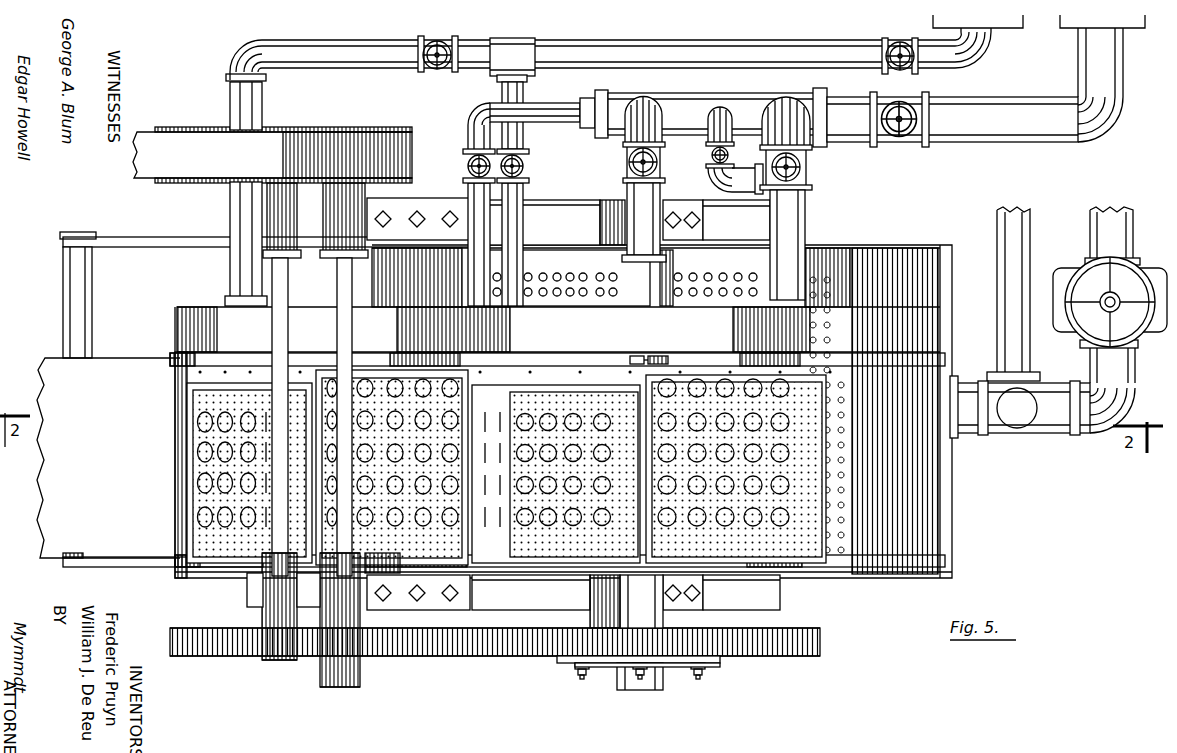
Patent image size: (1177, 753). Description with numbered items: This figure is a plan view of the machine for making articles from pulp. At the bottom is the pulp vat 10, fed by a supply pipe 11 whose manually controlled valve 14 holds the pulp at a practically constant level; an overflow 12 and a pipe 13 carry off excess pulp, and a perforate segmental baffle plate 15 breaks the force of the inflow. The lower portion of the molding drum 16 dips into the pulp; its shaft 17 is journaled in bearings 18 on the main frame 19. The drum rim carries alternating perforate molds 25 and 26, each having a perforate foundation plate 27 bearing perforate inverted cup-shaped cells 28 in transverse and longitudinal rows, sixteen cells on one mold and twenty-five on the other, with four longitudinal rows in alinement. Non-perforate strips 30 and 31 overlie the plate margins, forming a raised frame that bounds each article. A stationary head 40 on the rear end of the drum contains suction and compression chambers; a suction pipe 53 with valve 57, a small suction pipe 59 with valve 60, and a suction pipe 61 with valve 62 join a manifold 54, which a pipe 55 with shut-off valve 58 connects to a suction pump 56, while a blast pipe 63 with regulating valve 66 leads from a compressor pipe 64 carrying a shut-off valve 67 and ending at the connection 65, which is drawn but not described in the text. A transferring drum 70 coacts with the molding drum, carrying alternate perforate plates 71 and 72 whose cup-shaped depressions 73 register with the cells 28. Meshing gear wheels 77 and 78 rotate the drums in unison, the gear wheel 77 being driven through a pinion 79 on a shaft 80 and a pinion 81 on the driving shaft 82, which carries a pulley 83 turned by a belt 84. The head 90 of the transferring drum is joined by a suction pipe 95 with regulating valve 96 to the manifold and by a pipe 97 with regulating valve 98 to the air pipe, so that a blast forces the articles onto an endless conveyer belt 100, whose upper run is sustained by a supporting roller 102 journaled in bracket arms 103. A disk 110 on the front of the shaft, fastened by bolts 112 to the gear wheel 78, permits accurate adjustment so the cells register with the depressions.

The pulp vat 10 is at (398, 252).
The supply pipe 11 is at (1118, 230).
The overflow 12 is at (935, 548).
The pipe 13 is at (1003, 315).
The manually controlled valve 14 is at (1138, 272).
The perforate segmental baffle plate 15 is at (565, 250).
The molding drum 16 is at (758, 566).
The shaft 17 is at (663, 282).
The bearings 18 is at (690, 212).
The main frame 19 is at (450, 210).
The perforate mold 25 is at (575, 395).
The perforate mold 26 is at (705, 375).
The perforate foundation plate 27 is at (655, 505).
The perforate inverted cup-shaped cells 28 is at (818, 455).
The transverse strips 30 is at (645, 372).
The longitudinal strips 31 is at (547, 380).
The stationary head 40 is at (558, 329).
The suction pipe 53 is at (628, 182).
The manifold 54 is at (683, 103).
The pipe 55 is at (948, 128).
The suction pump 56 is at (1076, 33).
The valve 57 is at (630, 158).
The shut-off valve 58 is at (897, 138).
The small suction pipe 59 is at (742, 183).
The valve 60 is at (711, 155).
The suction pipe 61 is at (800, 232).
The valve 62 is at (806, 172).
The blast pipe 63 is at (521, 137).
The pipe 64 is at (763, 56).
The pipe connection 65 is at (998, 28).
The regulating valve 66 is at (524, 167).
The shut-off valve 67 is at (900, 42).
The transferring drum 70 is at (370, 572).
The perforate plate 71 is at (245, 392).
The perforate plate 72 is at (385, 385).
The perforate cup-shaped depressions 73 is at (200, 452).
The gear wheel 77 is at (175, 656).
The gear wheel 78 is at (560, 660).
The pinion 79 is at (322, 650).
The shaft 80 is at (336, 330).
The pinion 81 is at (262, 650).
The driving shaft 82 is at (283, 296).
The pulley 83 is at (325, 140).
The belt 84 is at (200, 147).
The head 90 is at (212, 318).
The suction pipe 95 is at (469, 140).
The regulating valve 96 is at (467, 168).
The pipe 97 is at (258, 112).
The regulating valve 98 is at (437, 41).
The endless conveyer belt 100 is at (40, 510).
The supporting roller 102 is at (90, 333).
The bracket arms 103 is at (157, 247).
The disk 110 is at (718, 660).
The bolts 112 is at (698, 673).